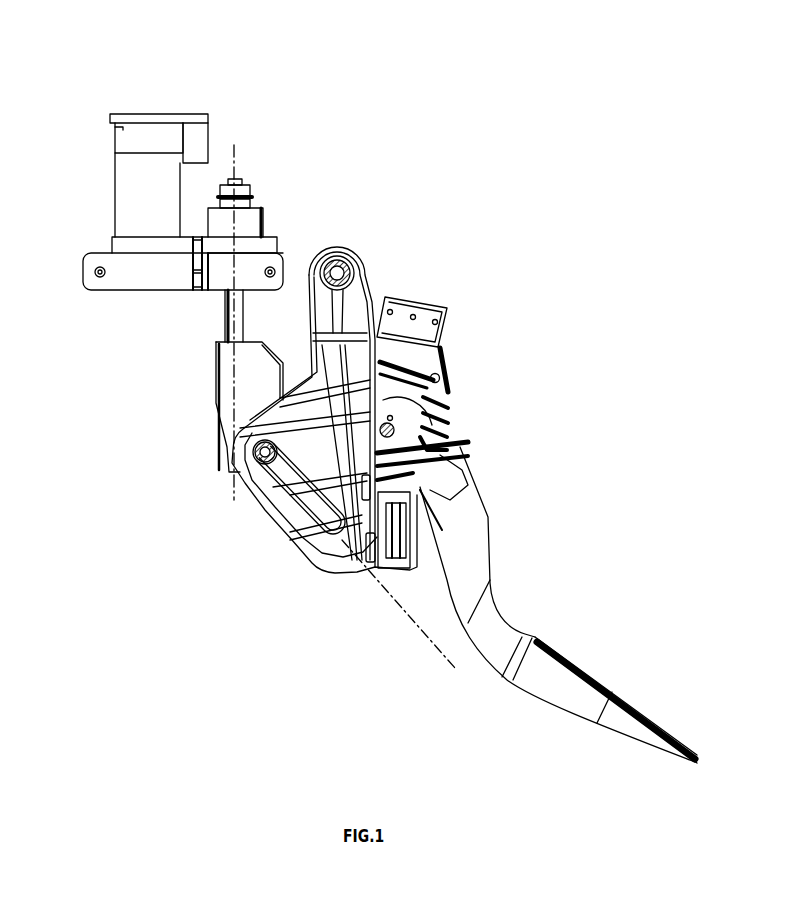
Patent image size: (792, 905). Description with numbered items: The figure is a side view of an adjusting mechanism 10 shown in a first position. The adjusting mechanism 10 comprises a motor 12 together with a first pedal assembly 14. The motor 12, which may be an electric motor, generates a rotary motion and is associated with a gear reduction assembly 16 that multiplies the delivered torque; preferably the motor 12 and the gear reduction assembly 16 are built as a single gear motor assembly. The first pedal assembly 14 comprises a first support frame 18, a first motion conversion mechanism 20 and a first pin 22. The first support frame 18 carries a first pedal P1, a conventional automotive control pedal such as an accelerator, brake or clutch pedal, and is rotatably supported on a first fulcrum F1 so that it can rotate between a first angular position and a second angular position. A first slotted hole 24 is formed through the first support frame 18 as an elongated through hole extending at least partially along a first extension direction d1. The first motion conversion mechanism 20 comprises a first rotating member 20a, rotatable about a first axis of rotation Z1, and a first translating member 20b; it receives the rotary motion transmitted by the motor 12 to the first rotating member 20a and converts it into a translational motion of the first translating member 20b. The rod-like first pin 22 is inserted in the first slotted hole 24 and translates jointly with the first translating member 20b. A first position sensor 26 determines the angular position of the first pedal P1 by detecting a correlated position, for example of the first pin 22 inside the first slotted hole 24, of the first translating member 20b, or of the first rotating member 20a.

The adjusting mechanism 10 is at (297, 593).
The motor 12 is at (219, 148).
The first pedal assembly 14 is at (497, 353).
The gear reduction assembly 16 is at (157, 268).
The first support frame 18 is at (410, 425).
The first motion conversion mechanism 20 is at (176, 394).
The first rotating member 20a is at (228, 309).
The first translating member 20b is at (245, 391).
The first pin 22 is at (265, 464).
The first slotted hole 24 is at (323, 567).
The first position sensor 26 is at (240, 181).
The first fulcrum F1 is at (352, 272).
The first axis of rotation Z1 is at (236, 155).
The first extension direction d1 is at (400, 612).
The first pedal P1 is at (577, 687).